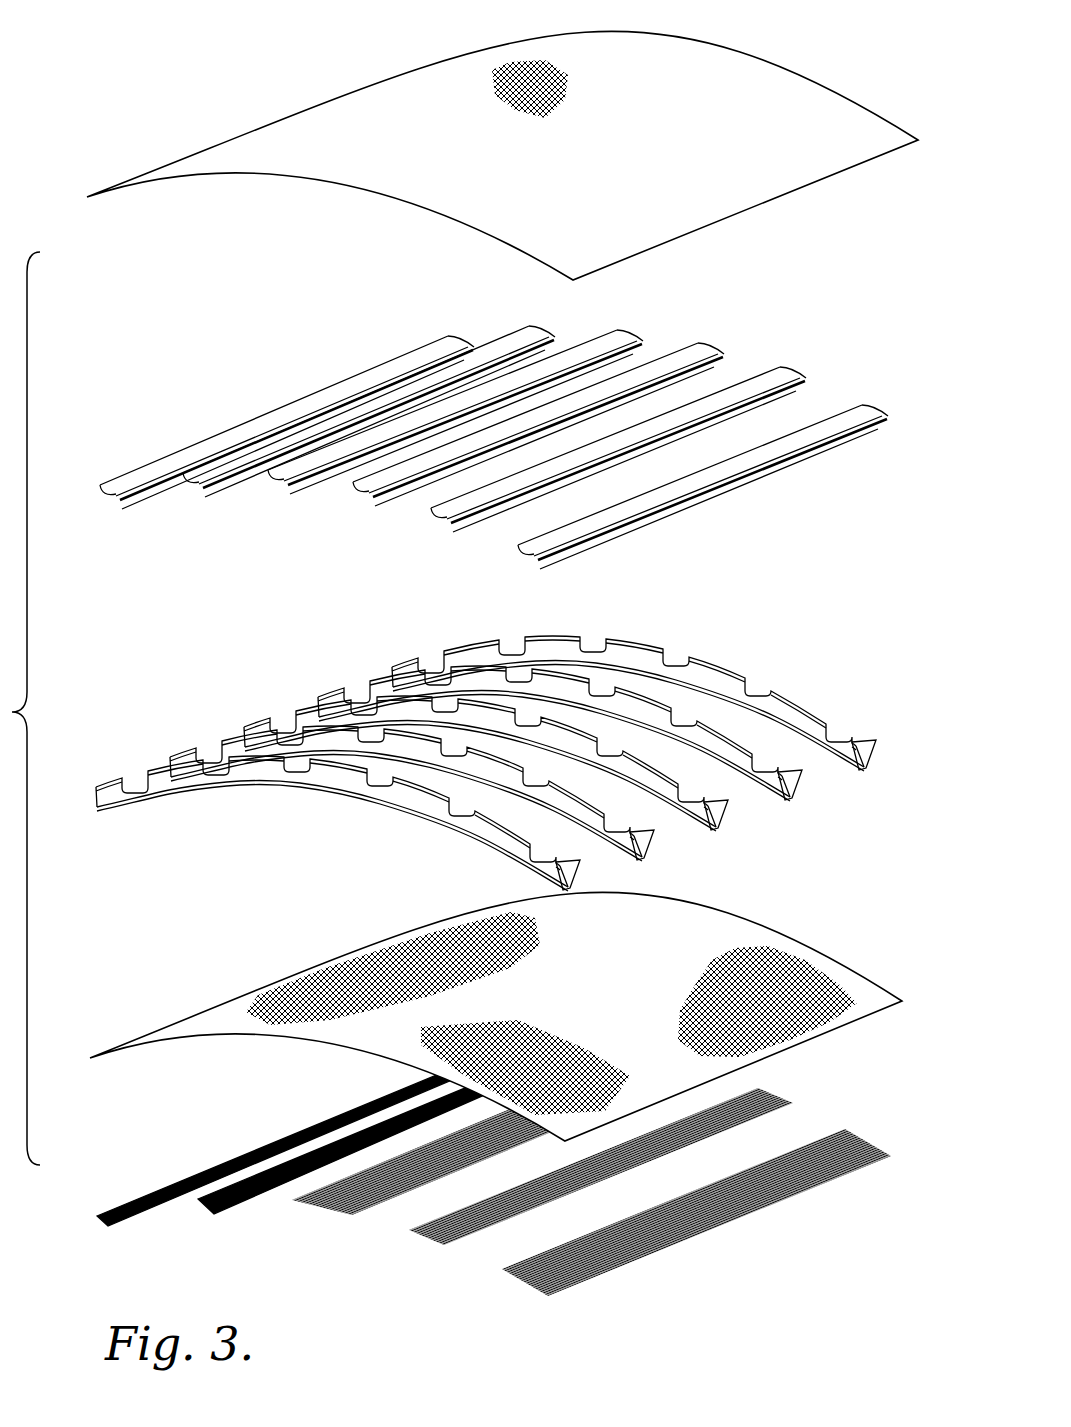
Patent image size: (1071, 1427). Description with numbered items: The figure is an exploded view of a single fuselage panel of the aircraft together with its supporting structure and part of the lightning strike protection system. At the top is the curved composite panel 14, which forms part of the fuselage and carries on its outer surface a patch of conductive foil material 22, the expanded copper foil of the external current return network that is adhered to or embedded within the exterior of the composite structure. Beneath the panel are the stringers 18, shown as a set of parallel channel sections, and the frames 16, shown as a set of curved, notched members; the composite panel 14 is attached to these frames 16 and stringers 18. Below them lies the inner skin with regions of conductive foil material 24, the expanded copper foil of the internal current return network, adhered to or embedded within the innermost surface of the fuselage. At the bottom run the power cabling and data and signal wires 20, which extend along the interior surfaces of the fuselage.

The composite panel 14 is at (700, 62).
The conductive foil material 22 is at (503, 73).
The stringer 18 is at (410, 553).
The frame 16 is at (880, 822).
The conductive foil material 24 is at (723, 940).
The power cabling and data and signal wires 20 is at (437, 1298).